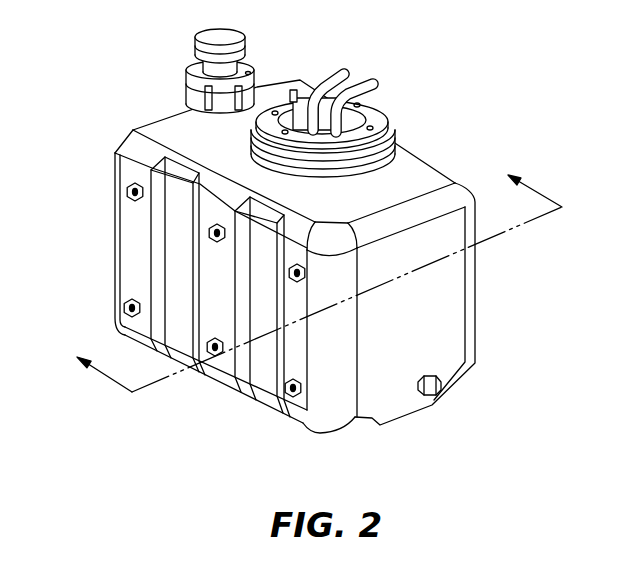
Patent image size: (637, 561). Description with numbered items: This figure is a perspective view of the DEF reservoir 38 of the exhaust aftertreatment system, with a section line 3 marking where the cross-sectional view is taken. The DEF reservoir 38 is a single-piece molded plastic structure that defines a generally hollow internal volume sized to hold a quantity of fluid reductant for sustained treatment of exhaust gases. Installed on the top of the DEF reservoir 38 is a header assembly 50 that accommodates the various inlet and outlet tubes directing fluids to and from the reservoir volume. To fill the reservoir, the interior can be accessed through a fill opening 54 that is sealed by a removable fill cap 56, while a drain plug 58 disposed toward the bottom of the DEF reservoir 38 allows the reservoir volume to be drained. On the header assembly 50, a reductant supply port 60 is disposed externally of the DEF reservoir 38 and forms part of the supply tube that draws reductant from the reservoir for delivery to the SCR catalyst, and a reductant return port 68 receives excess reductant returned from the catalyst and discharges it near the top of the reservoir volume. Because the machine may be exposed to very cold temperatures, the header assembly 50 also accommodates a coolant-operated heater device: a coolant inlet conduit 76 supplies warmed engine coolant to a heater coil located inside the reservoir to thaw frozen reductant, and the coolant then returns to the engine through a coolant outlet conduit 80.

The header assembly 50 is at (313, 216).
The DEF reservoir 38 is at (427, 167).
The fill opening 54 is at (178, 91).
The fill cap 56 is at (221, 38).
The drain plug 58 is at (442, 389).
The reductant supply port 60 is at (293, 89).
The reductant return port 68 is at (254, 142).
The coolant inlet conduit 76 is at (331, 80).
The coolant outlet conduit 80 is at (376, 91).
The section line 3- 3 is at (313, 277).